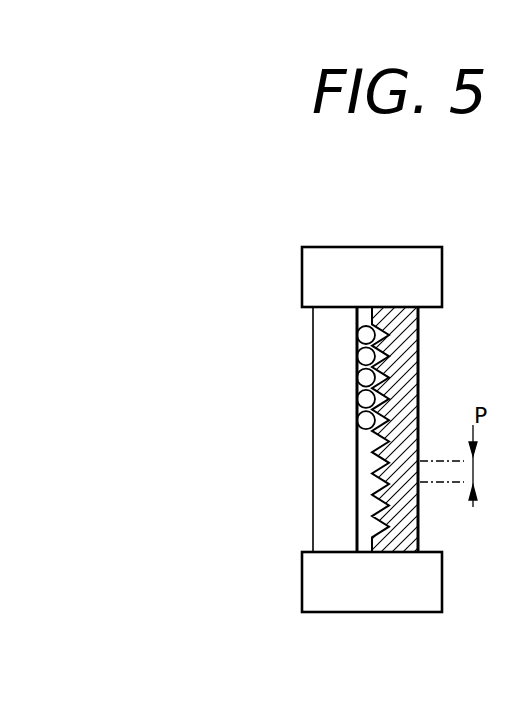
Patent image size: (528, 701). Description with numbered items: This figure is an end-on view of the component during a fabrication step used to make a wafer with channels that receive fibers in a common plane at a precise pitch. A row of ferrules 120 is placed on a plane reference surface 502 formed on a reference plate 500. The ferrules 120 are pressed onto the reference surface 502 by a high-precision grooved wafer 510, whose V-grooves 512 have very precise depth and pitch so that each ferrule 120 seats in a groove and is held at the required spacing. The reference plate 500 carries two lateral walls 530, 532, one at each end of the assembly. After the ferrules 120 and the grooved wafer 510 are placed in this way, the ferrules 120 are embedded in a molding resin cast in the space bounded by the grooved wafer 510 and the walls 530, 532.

The lateral wall 530 is at (369, 256).
The lateral wall 532 is at (375, 597).
The reference plate 500 is at (330, 444).
The grooved wafer 510 is at (406, 339).
The V-grooves 512 is at (371, 461).
The plane reference surface 502 is at (379, 508).
The ferrules 120 is at (357, 335).